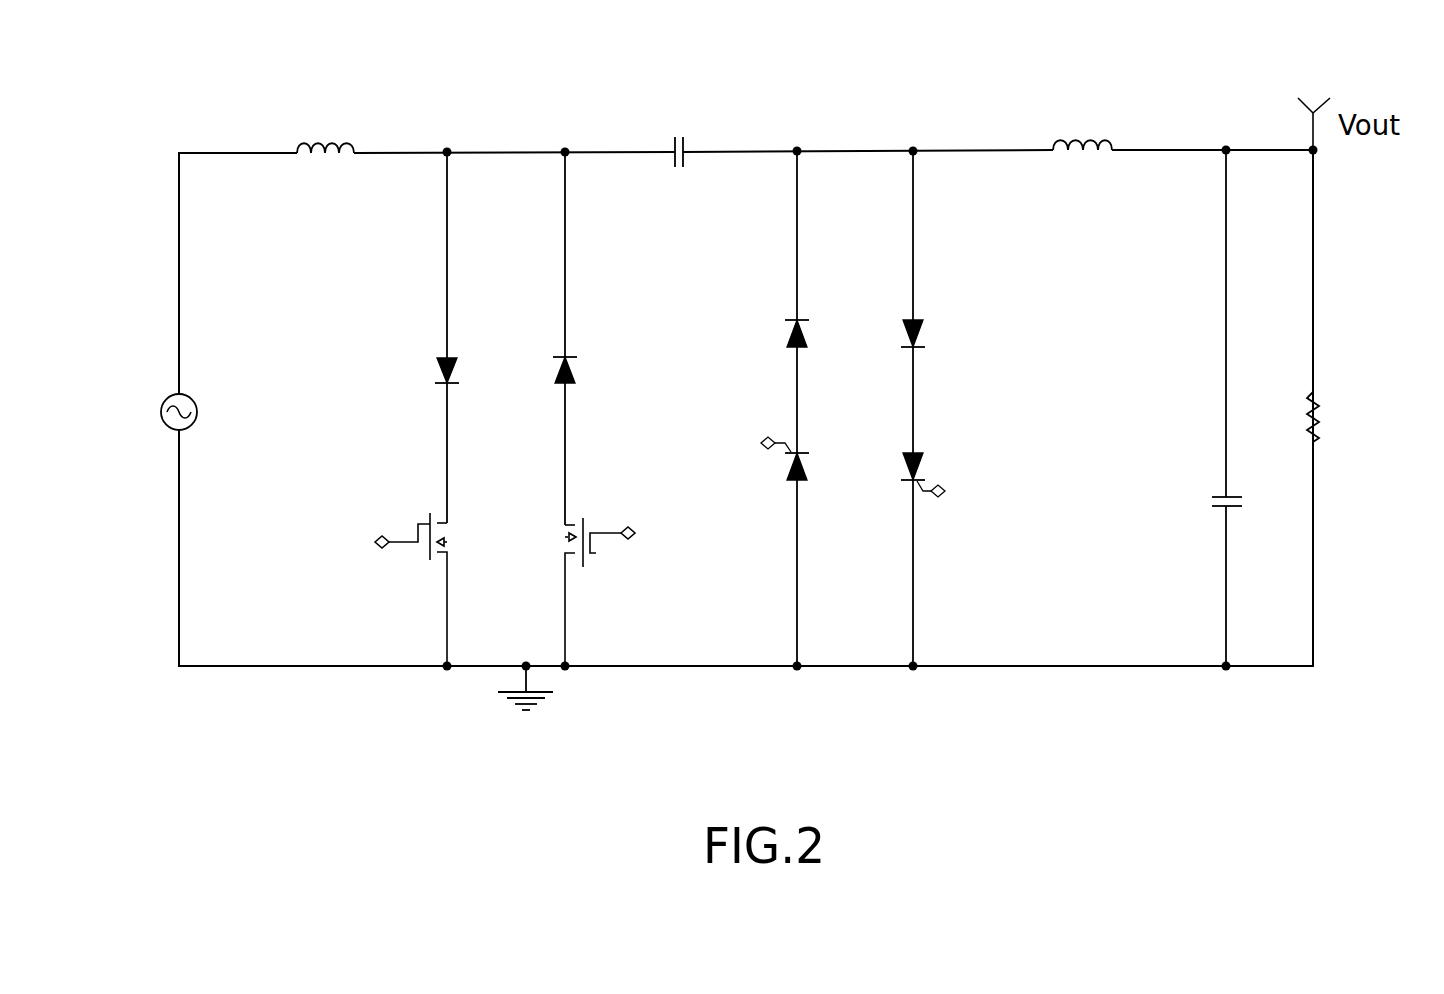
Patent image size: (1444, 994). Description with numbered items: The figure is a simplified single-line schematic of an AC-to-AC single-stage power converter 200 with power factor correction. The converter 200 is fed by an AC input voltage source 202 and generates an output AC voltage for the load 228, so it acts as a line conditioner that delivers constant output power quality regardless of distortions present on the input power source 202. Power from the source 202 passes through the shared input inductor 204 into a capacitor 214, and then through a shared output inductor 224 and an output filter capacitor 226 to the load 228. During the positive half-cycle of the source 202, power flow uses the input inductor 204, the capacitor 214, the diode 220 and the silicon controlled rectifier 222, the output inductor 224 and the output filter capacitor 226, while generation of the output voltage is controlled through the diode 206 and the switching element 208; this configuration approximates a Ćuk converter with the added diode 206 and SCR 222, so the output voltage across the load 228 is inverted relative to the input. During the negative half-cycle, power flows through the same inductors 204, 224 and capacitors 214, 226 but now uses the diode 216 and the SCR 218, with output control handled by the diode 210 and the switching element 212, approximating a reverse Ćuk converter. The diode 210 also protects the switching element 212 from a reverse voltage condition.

The converter 200 is at (295, 726).
The AC input voltage source 202 is at (160, 414).
The input inductor 204 is at (297, 150).
The diode 206 is at (437, 373).
The switching element 208 is at (430, 525).
The diode 210 is at (575, 371).
The switching element 212 is at (583, 522).
The capacitor 214 is at (679, 136).
The diode 216 is at (787, 334).
The silicon controlled rectifier 218 is at (787, 468).
The diode 220 is at (921, 333).
The silicon controlled rectifier 222 is at (921, 467).
The output inductor 224 is at (1055, 148).
The output filter capacitor 226 is at (1210, 502).
The load 228 is at (1318, 434).